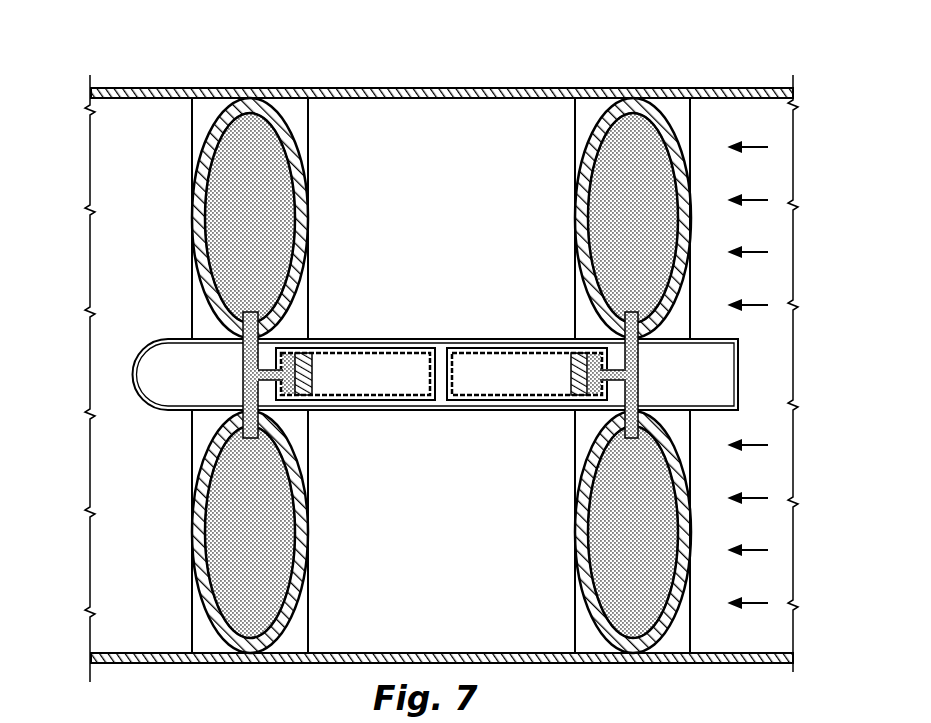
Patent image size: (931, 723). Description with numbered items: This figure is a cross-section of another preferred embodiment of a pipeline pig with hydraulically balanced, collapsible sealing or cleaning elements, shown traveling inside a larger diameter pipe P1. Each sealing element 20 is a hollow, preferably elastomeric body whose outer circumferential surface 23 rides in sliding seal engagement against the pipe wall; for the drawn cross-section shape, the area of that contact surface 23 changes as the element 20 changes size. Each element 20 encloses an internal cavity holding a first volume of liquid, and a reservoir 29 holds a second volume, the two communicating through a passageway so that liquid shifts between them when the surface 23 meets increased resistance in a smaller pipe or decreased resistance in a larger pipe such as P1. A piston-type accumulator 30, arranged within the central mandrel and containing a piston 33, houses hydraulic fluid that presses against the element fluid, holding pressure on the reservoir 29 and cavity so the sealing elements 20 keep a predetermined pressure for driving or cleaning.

The collapsible and expandable sealing or cleaning element 20 is at (193, 195).
The outer circumferential surface 23 is at (248, 95).
The reservoir 29 is at (303, 350).
The accumulator 30 is at (397, 348).
The piston 33 is at (320, 398).
The larger diameter pipe P1 is at (388, 87).